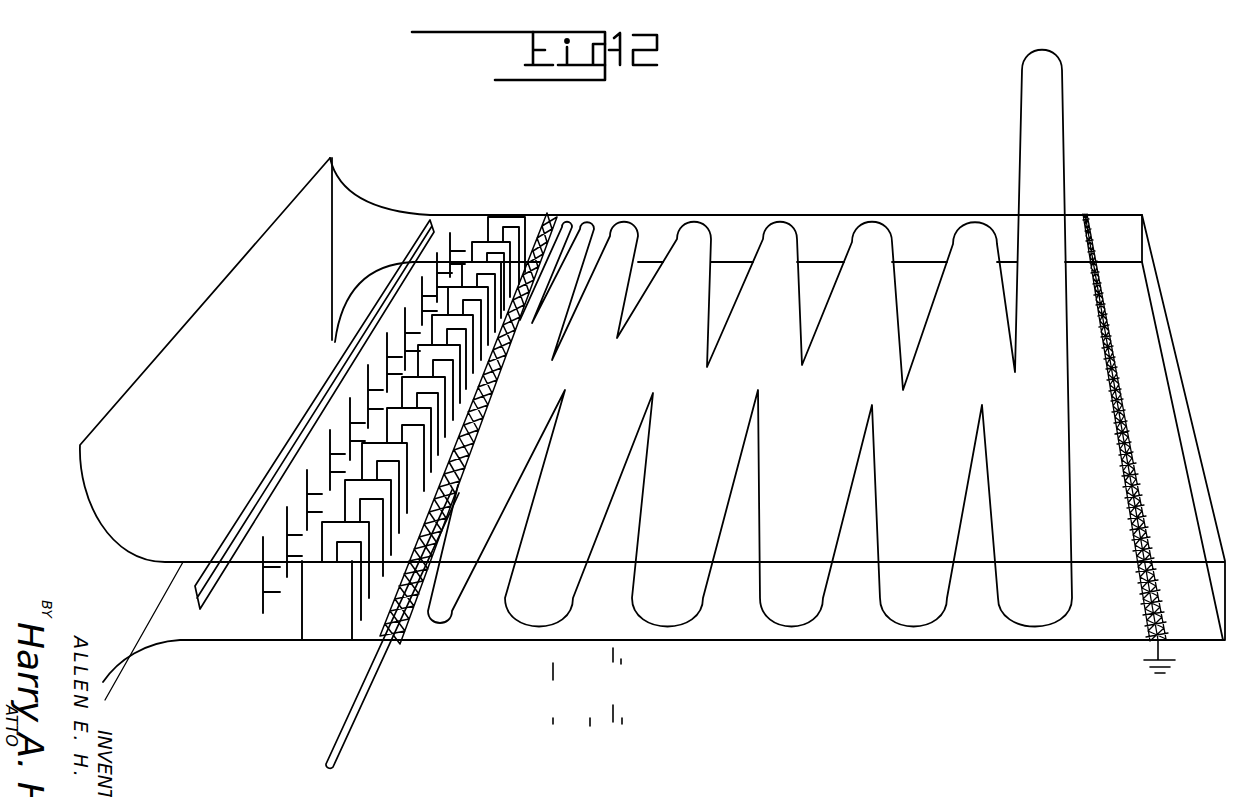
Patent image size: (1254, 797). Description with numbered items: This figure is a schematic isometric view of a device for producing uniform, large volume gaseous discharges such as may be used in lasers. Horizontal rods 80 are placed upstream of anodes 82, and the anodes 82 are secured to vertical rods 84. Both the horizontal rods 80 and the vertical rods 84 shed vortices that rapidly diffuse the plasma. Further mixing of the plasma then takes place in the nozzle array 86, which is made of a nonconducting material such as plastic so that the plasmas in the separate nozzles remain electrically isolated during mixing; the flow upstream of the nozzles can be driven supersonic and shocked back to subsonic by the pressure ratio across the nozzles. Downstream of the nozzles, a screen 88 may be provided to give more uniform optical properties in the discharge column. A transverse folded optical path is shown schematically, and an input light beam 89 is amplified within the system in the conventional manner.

The horizontal rods 80 is at (196, 607).
The anodes 82 is at (280, 592).
The vertical rods 84 is at (330, 442).
The nozzle array 86 is at (322, 628).
The screen 88 is at (557, 226).
The input light beam 89 is at (372, 681).